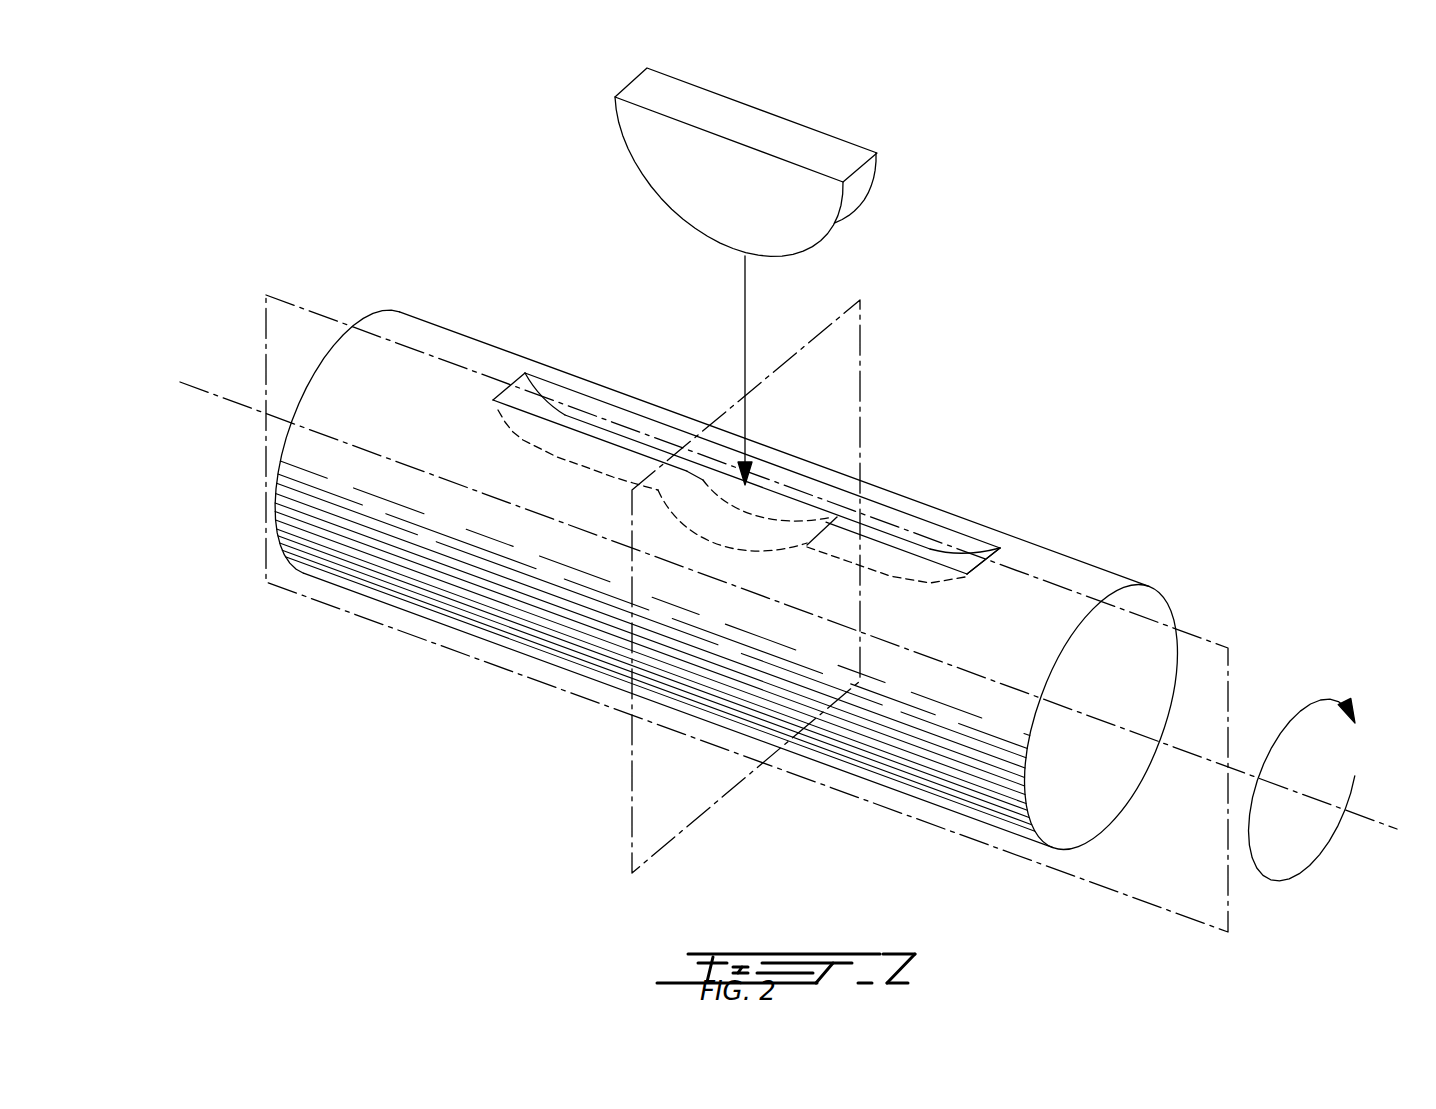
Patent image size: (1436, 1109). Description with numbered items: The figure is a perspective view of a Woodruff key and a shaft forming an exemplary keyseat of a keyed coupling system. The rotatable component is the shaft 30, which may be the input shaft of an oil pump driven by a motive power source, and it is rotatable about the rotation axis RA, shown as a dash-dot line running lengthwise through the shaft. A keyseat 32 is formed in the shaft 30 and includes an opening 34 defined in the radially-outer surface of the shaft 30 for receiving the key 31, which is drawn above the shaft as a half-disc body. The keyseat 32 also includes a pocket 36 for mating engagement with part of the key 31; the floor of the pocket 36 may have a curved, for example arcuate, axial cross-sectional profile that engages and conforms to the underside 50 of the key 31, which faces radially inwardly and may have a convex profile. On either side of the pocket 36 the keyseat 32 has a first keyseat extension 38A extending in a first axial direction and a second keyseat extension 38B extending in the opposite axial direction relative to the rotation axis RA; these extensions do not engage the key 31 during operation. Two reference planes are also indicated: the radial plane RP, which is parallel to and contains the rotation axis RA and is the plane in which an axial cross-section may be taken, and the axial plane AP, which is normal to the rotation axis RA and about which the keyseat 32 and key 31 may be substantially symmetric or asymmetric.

The shaft 30 is at (478, 604).
The key 31 is at (805, 198).
The keyseat 32 is at (857, 480).
The opening 34 is at (765, 437).
The pocket 36 is at (755, 530).
The first keyseat extension 38A is at (563, 398).
The second keyseat extension 38B is at (957, 540).
The underside 50 is at (793, 262).
The rotation axis RA is at (202, 390).
The axial plane AP is at (630, 817).
The radial plane RP is at (913, 820).